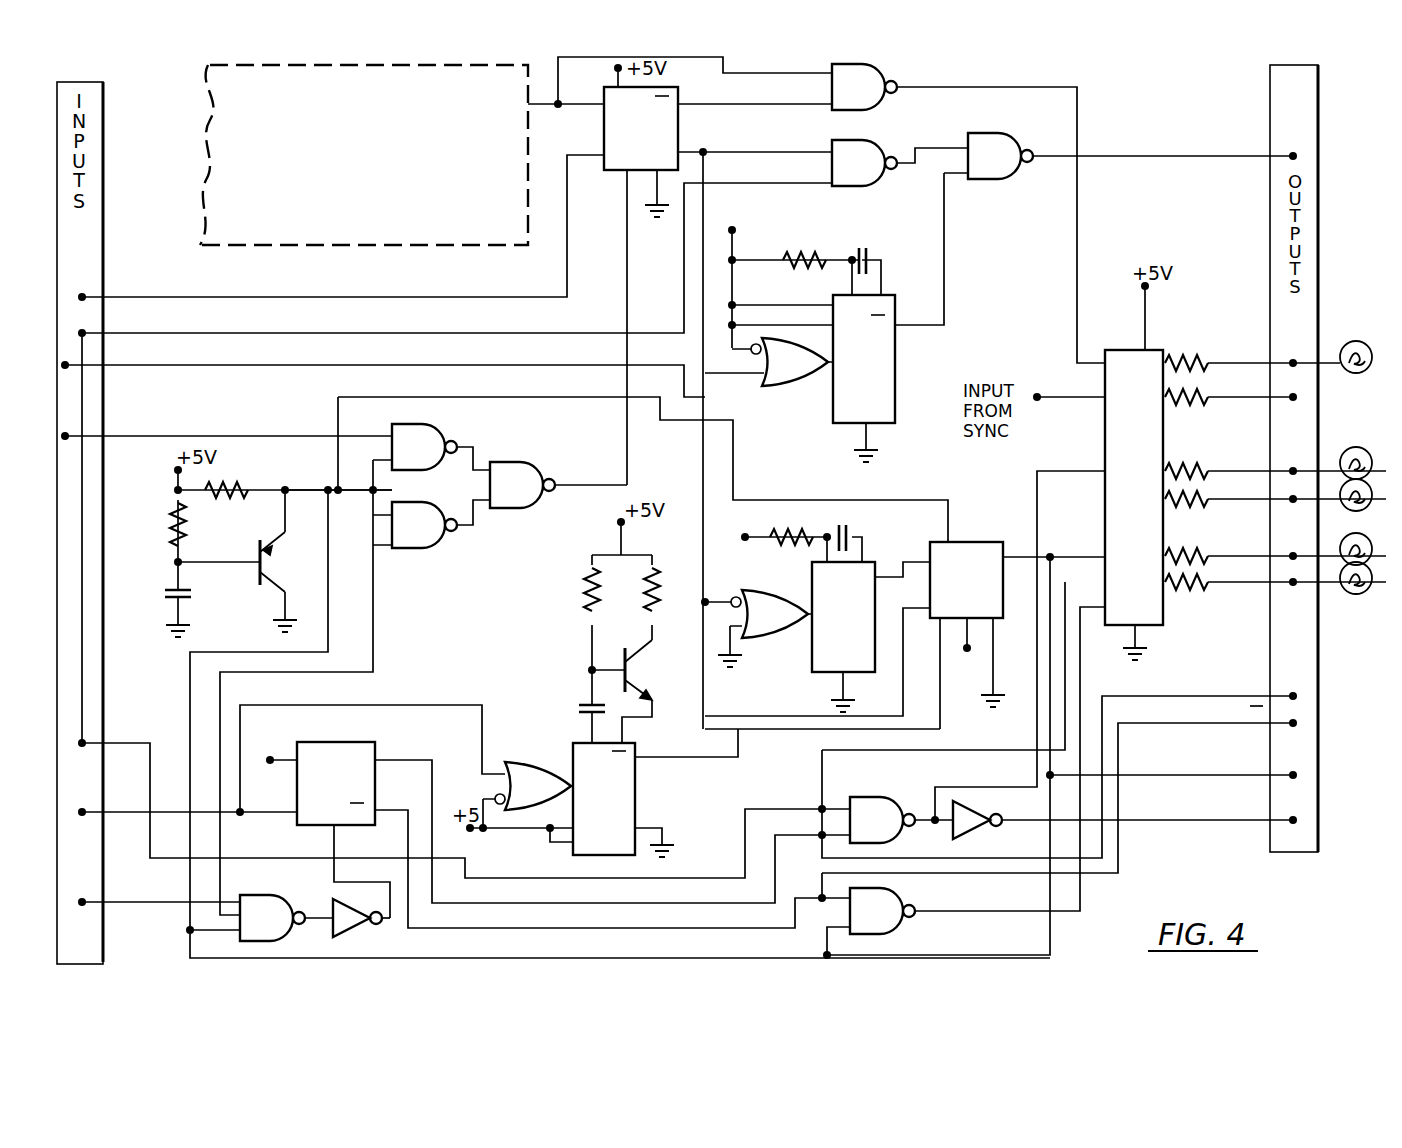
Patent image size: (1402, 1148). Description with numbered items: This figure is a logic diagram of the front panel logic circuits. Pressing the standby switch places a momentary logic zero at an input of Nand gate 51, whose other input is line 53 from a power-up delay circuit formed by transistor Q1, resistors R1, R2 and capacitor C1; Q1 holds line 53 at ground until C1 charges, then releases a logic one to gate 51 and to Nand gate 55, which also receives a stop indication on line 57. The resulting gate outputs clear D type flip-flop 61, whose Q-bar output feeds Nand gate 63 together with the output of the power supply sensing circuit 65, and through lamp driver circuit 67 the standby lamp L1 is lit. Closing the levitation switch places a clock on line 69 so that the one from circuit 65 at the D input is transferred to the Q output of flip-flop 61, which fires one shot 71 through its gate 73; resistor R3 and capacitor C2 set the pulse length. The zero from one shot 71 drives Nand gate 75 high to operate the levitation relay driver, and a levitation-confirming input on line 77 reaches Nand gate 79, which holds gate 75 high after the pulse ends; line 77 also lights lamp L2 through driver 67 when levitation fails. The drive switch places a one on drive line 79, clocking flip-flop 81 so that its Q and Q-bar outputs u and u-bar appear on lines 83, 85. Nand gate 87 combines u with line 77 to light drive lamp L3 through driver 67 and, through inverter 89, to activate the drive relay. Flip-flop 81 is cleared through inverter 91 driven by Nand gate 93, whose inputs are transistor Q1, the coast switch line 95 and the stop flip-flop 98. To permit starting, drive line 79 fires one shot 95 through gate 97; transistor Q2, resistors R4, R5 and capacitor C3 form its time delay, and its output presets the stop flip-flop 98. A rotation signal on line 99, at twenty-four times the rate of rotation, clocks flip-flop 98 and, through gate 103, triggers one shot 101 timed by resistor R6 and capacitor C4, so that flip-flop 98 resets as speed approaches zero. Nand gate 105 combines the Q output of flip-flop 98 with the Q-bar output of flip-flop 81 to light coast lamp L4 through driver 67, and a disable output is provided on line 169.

The Nand gate 51 is at (438, 438).
The line 53 is at (338, 486).
The Nand gate 55 is at (440, 540).
The line 57 is at (375, 625).
The flip-flop 61 is at (667, 132).
The Nand gate 63 is at (880, 72).
The power supply sensing circuit 65 is at (404, 248).
The lamp driver circuit 67 is at (1158, 354).
The line 69 is at (294, 297).
The one shot 71 is at (843, 338).
The gate 73 is at (786, 386).
The Nand gate 75 is at (985, 180).
The line 77 is at (296, 333).
The Nand gate 79 is at (878, 146).
The flip-flop 81 is at (355, 742).
The line 83 is at (1172, 696).
The line 85 is at (1182, 732).
The Nand gate 87 is at (877, 797).
The inverter 89 is at (976, 834).
The inverter 91 is at (356, 938).
The Nand gate 93 is at (268, 896).
The one shot 95 is at (640, 780).
The gate 97 is at (520, 780).
The flip-flop 98 is at (960, 548).
The line 99 is at (284, 366).
The one shot 101 is at (823, 609).
The gate 103 is at (780, 628).
The NAND gate 105 is at (898, 898).
The disable line 169 is at (1150, 773).
The resistor R1 is at (230, 488).
The resistor R2 is at (186, 540).
The resistor R3 is at (820, 258).
The resistor R4 is at (660, 606).
The resistor R5 is at (582, 600).
The resistor R6 is at (795, 526).
The capacitor C1 is at (192, 598).
The capacitor C2 is at (871, 250).
The capacitor C3 is at (586, 704).
The capacitor C4 is at (852, 526).
The transistor Q1 is at (276, 562).
The transistor Q2 is at (642, 670).
The standby lamp L1 is at (1344, 350).
The lamp L2 is at (1358, 595).
The drive lamp L3 is at (1360, 449).
The coast lamp L4 is at (1360, 512).